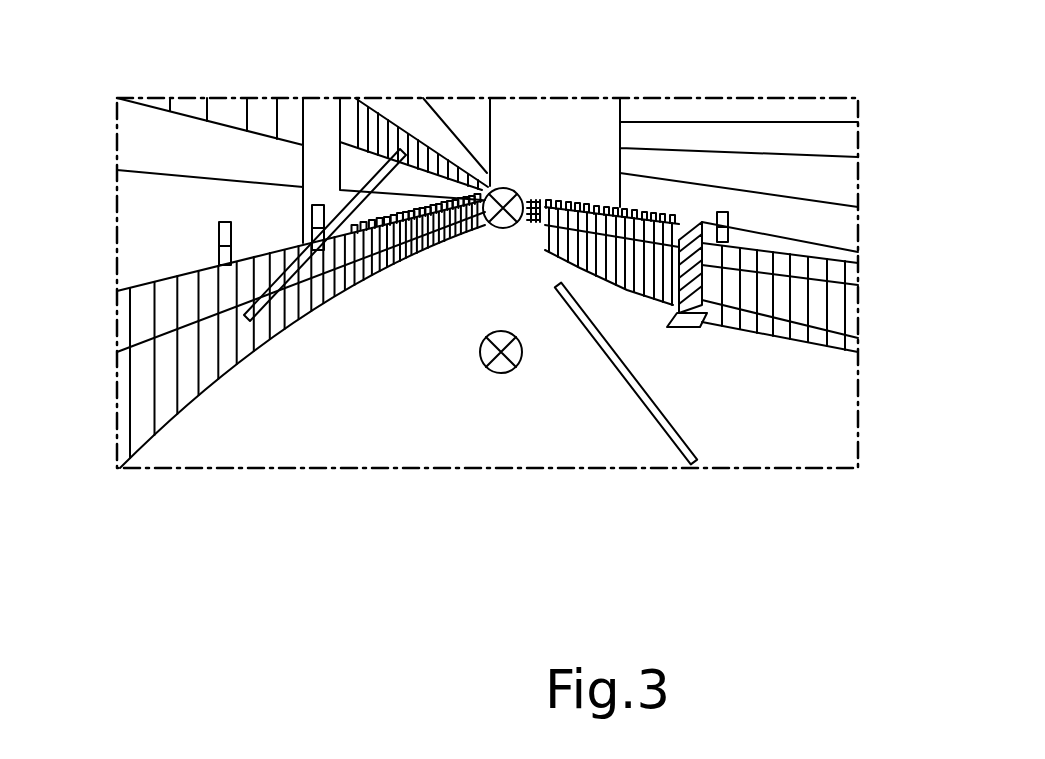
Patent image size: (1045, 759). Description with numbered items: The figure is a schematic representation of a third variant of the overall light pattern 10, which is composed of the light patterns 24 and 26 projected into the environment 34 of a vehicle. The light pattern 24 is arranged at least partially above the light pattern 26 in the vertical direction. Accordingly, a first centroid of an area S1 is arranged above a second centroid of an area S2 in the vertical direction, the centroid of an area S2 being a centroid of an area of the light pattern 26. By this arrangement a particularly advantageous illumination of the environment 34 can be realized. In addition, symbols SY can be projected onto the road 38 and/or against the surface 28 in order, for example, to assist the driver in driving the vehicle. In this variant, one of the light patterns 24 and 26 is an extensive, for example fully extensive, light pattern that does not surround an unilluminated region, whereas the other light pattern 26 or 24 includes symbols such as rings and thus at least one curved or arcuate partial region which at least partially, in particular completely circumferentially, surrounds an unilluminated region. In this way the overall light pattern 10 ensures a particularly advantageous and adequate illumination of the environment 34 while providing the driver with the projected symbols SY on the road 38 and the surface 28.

The overall light pattern 10 is at (719, 114).
The light pattern 24 is at (773, 162).
The light pattern 26 is at (772, 338).
The surface 28 is at (108, 204).
The environment 34 is at (83, 152).
The road 38 is at (817, 428).
The first centroid of an area S1 is at (506, 189).
The second centroid of an area S2 is at (503, 374).
The symbols SY is at (276, 300).